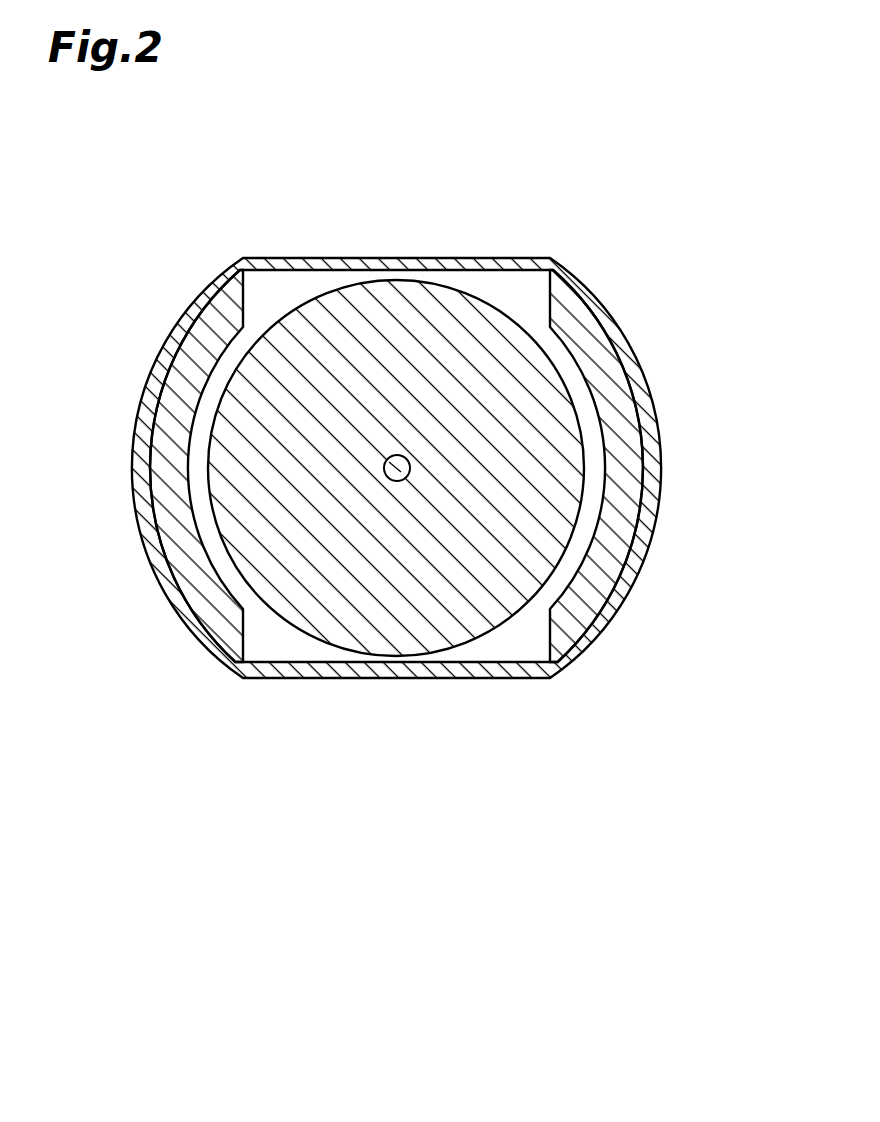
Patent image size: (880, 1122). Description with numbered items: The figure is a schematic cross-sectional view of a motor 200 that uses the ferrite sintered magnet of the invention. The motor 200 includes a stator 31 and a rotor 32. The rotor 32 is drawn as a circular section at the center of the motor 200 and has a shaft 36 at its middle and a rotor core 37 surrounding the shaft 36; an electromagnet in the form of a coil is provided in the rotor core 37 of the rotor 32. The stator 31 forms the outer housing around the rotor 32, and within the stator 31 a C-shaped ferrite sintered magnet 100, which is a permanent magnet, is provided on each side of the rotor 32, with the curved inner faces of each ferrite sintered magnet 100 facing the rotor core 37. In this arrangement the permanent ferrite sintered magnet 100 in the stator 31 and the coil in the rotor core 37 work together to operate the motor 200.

The motor 200 is at (672, 184).
The stator 31 is at (652, 497).
The ferrite sintered magnet 100 is at (165, 472).
The rotor 32 is at (464, 454).
The shaft 36 is at (411, 466).
The rotor core 37 is at (548, 375).